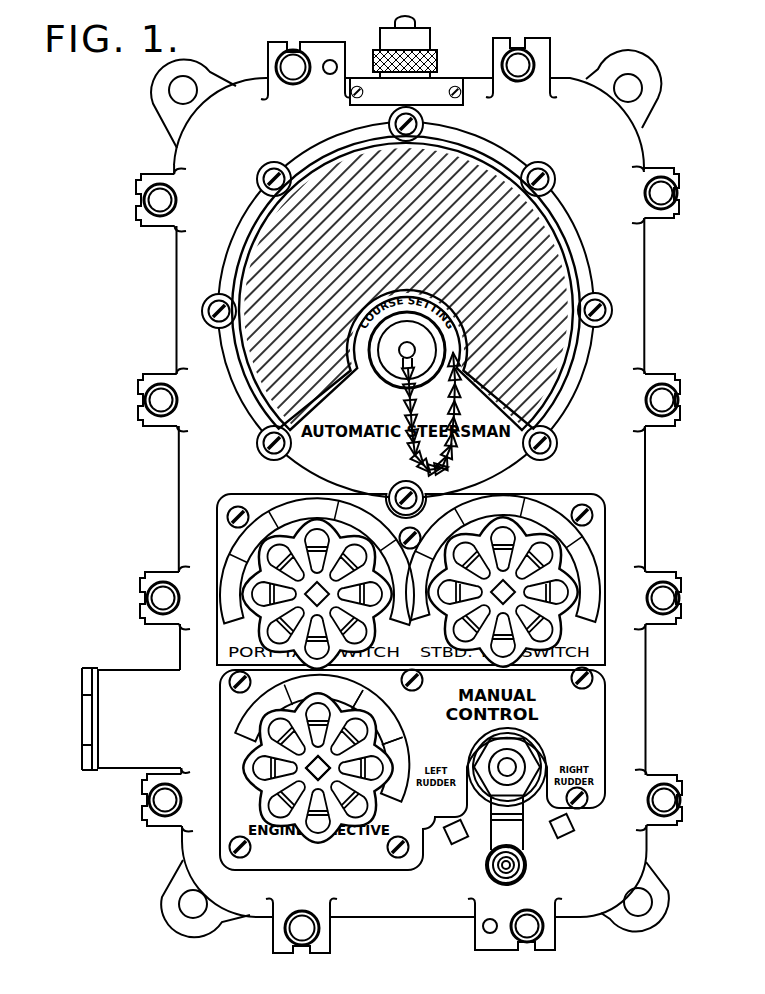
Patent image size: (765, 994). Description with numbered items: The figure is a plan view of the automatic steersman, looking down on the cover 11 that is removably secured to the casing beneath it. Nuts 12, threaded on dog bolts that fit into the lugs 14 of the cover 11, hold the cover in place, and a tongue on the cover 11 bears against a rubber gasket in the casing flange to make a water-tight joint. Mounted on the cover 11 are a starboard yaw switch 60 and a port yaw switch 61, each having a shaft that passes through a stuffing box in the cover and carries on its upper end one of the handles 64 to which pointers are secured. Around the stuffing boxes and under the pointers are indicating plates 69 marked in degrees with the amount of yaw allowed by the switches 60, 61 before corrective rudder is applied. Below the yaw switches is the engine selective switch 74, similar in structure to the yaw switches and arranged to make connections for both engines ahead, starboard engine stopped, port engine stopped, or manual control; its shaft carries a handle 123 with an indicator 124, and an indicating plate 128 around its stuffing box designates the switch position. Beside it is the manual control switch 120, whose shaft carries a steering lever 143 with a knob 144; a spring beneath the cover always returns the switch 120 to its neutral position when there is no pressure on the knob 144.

The cover 11 is at (382, 484).
The lugs 14 is at (672, 172).
The nuts 12 is at (667, 194).
The port yaw switch 61 is at (263, 626).
The starboard yaw switch 60 is at (562, 630).
The indicating plates 69 is at (430, 624).
The handles 64 is at (446, 640).
The indicating plate 128 is at (393, 733).
The indicator 124 is at (316, 722).
The engine selective switch 74 is at (268, 791).
The handle 123 is at (375, 811).
The manual control switch 120 is at (518, 769).
The steering lever 143 is at (516, 838).
The knob 144 is at (526, 869).